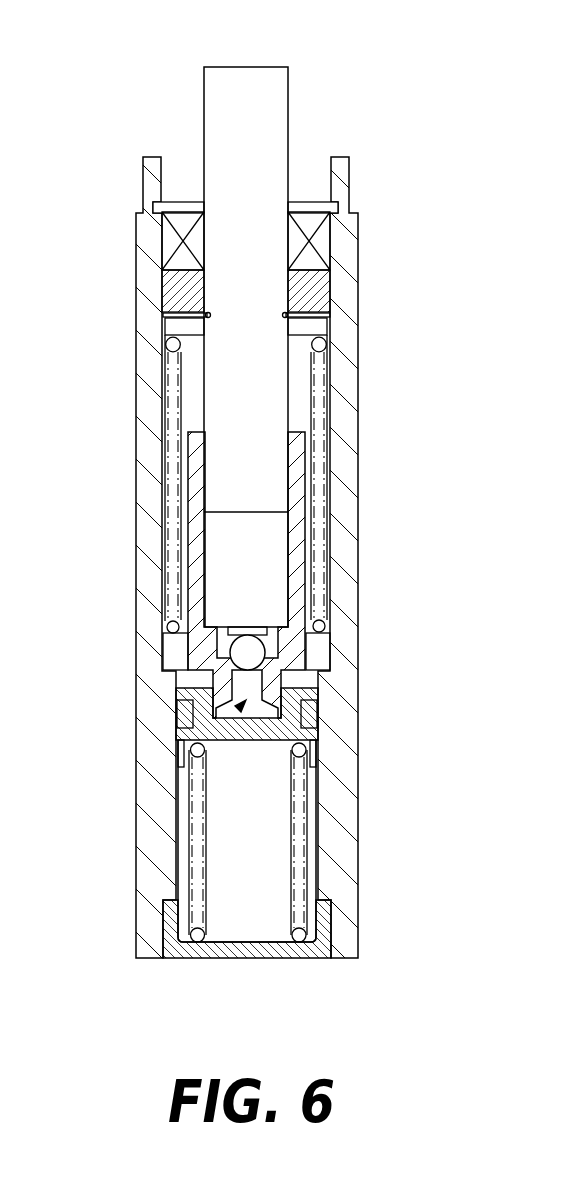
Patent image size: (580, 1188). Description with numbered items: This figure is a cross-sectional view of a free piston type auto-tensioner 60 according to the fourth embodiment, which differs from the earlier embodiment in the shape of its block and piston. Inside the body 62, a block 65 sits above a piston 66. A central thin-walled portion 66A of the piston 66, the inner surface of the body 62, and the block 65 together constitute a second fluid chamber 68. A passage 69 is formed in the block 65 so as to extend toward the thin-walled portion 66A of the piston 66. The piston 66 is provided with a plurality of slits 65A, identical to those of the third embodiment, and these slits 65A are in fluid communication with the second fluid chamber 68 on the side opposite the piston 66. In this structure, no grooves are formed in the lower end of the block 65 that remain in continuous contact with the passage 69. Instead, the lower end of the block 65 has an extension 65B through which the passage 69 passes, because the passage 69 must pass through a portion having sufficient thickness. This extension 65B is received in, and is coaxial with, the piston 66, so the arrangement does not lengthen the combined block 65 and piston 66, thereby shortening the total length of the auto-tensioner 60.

The auto-tensioner 60 is at (251, 494).
The body 62 is at (347, 346).
The block 65 is at (193, 463).
The slits 65A is at (173, 645).
The extension 65B is at (268, 676).
The piston 66 is at (197, 732).
The central thin-walled portion 66A is at (247, 742).
The second fluid chamber 68 is at (317, 718).
The passage 69 is at (239, 707).